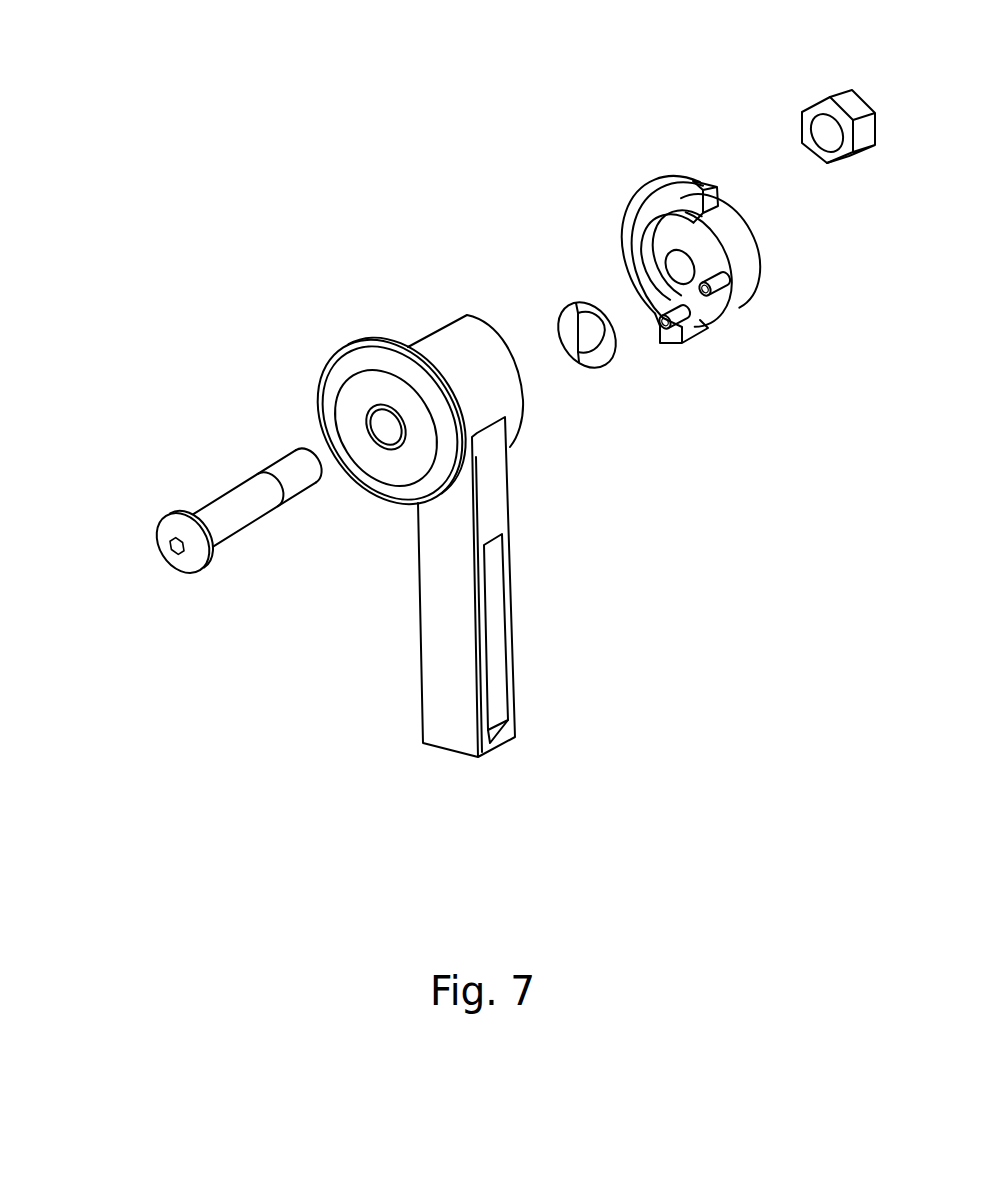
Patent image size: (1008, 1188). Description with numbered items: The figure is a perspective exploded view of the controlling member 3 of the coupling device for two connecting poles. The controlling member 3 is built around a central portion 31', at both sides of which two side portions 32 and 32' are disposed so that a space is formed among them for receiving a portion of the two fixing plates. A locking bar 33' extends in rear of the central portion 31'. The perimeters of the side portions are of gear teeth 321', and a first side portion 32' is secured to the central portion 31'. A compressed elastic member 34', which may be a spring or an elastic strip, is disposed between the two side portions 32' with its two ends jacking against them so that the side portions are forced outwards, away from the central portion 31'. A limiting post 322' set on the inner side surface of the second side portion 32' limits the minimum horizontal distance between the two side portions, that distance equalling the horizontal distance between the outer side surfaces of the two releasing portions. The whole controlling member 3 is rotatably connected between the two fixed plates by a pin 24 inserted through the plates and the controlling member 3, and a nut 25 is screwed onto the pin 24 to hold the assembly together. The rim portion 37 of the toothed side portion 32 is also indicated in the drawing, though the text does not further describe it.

The controlling member 3 is at (485, 203).
The pin 24 is at (170, 541).
The nut 25 is at (843, 97).
The central portion 31' is at (465, 497).
The side portion 32 is at (354, 396).
The side portion 32' is at (710, 214).
The locking bar 33' is at (542, 592).
The compressed elastic member 34' is at (623, 376).
The rim 37 is at (420, 337).
The gear teeth 321' is at (666, 211).
The limiting post 322' is at (756, 319).